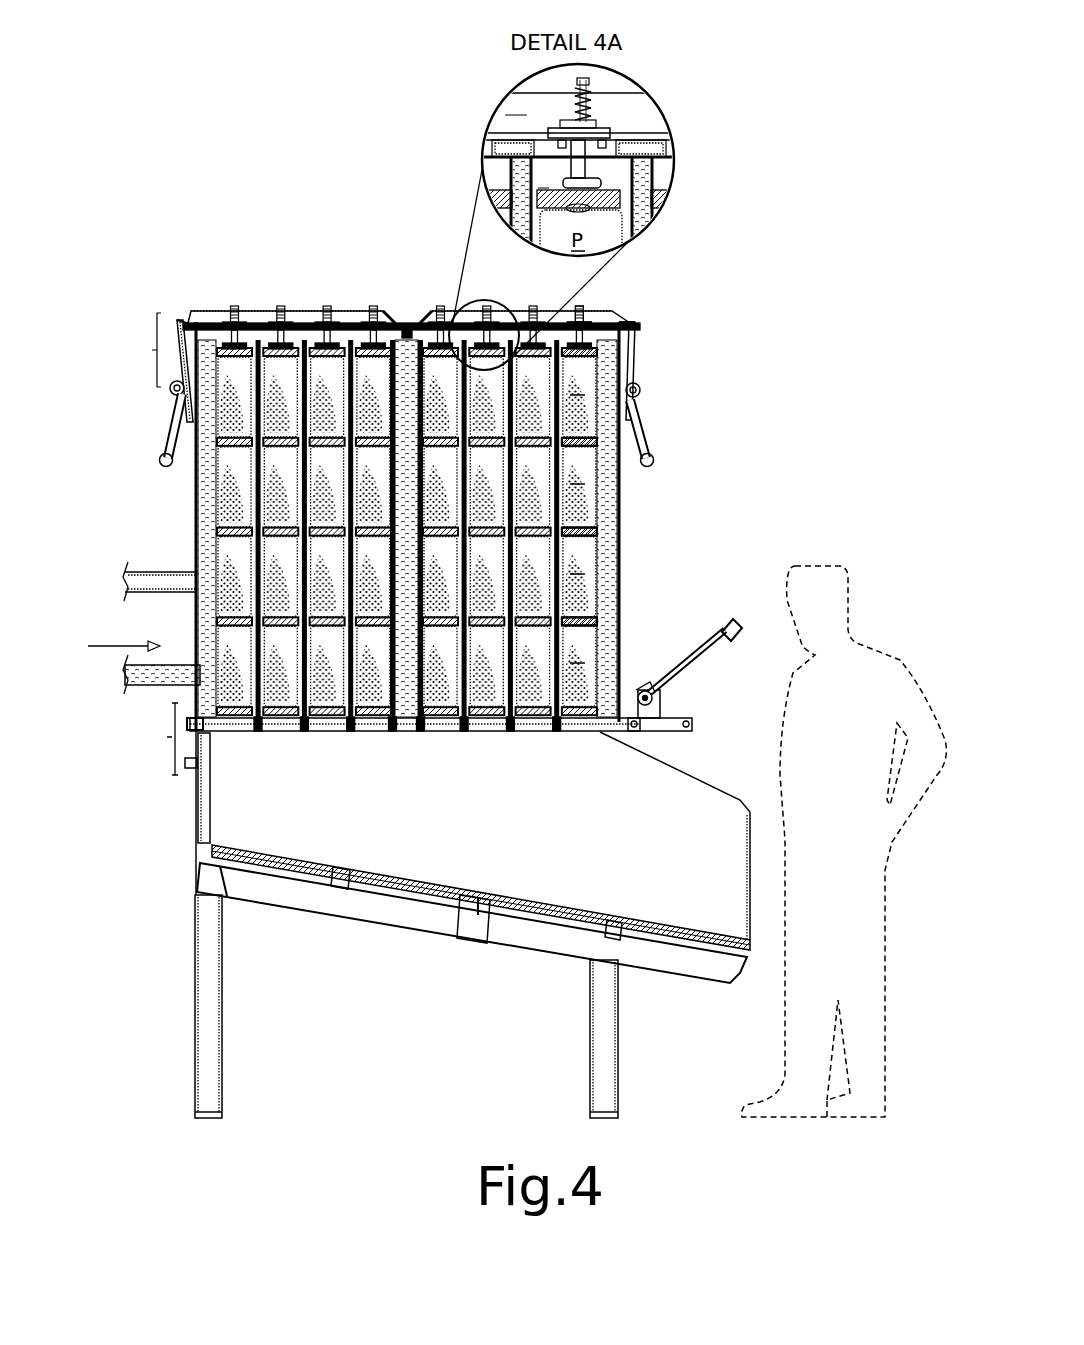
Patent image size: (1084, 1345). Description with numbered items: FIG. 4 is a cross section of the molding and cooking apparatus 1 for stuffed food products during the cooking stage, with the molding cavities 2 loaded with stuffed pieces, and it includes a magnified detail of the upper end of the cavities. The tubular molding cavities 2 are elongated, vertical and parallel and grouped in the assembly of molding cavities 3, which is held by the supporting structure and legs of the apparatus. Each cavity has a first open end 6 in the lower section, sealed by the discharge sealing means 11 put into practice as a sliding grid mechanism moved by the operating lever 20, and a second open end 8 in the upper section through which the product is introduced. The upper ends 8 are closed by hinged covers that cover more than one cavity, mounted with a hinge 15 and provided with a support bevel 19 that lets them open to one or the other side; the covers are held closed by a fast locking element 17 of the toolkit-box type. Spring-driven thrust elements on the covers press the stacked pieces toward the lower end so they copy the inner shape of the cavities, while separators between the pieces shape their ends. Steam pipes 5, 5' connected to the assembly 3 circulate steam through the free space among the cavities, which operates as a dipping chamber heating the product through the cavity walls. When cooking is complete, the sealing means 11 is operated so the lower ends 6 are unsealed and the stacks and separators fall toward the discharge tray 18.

The apparatus 1 is at (237, 268).
The molding cavity 2 is at (569, 164).
The assembly of molding cavities 3 is at (193, 508).
The steam pipe 5 is at (142, 699).
The steam pipe 5' is at (159, 561).
The first open end 6 is at (168, 737).
The second open end 8 is at (157, 350).
The discharge sealing means 11 is at (573, 722).
The hinge 15 is at (400, 325).
The fast locking element 17 is at (649, 410).
The discharge tray 18 is at (537, 907).
The support bevel 19 is at (420, 325).
The operating lever 20 is at (700, 643).